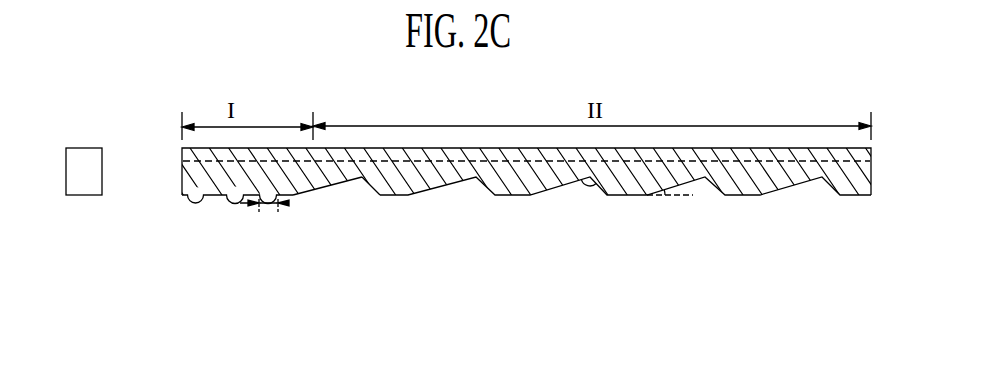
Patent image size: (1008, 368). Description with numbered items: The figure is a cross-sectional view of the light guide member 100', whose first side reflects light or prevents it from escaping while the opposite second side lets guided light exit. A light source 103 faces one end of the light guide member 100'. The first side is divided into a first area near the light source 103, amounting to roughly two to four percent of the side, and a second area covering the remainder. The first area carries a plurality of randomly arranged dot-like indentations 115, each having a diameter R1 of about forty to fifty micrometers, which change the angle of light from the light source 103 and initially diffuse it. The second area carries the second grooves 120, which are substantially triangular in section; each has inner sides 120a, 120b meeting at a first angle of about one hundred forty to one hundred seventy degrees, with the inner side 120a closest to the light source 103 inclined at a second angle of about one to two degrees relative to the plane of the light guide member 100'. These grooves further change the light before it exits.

The light source 103 is at (87, 150).
The light guide member 100' is at (514, 171).
The dot-like indentations 115 is at (235, 190).
The diameter of the dot-like indentations R1 is at (273, 215).
The second grooves 120 is at (820, 182).
The inner side of the second groove 120a is at (331, 188).
The inner side of the second groove 120b is at (369, 189).